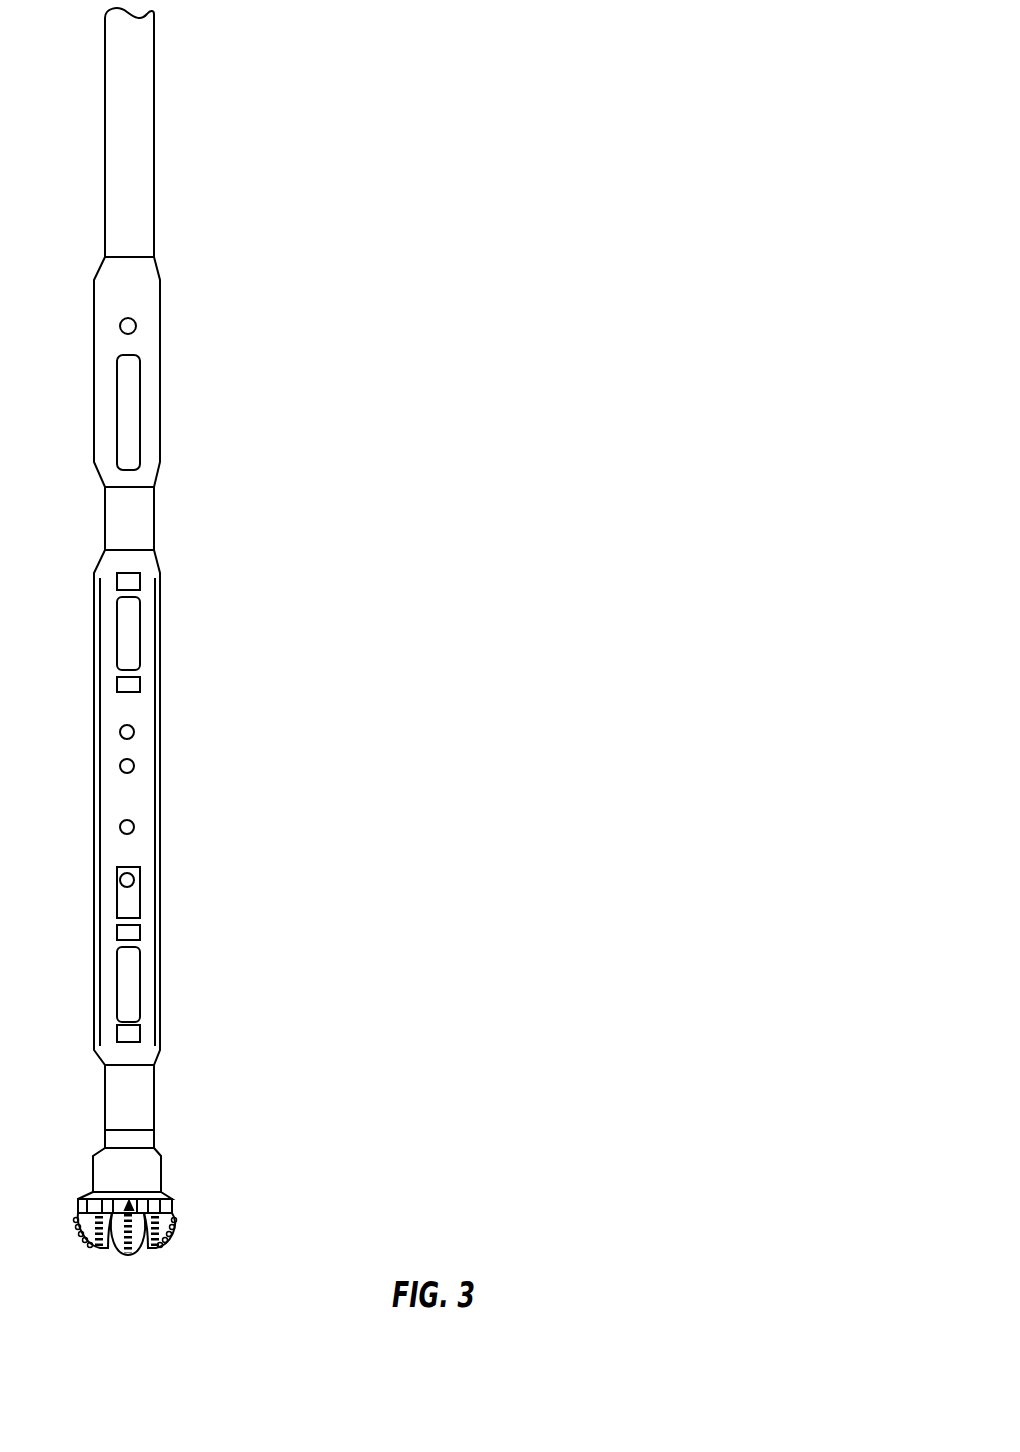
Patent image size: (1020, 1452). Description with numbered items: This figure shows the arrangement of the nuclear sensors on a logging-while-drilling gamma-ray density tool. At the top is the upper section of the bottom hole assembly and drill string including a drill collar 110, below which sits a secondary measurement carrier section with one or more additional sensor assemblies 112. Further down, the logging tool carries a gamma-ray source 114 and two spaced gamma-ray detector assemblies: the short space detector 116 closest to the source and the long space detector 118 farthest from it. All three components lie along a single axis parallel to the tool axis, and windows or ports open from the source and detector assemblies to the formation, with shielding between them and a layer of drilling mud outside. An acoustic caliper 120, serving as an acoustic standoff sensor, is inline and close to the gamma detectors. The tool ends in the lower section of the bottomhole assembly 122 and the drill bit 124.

The drill collar 110 is at (154, 55).
The additional sensor assemblies 112 is at (160, 377).
The gamma-ray source 114 is at (143, 731).
The short space detector 116 is at (143, 766).
The long space detector 118 is at (143, 826).
The acoustic caliper 120 is at (143, 880).
The lower section of the bottomhole assembly 122 is at (155, 1106).
The drill bit 124 is at (172, 1206).